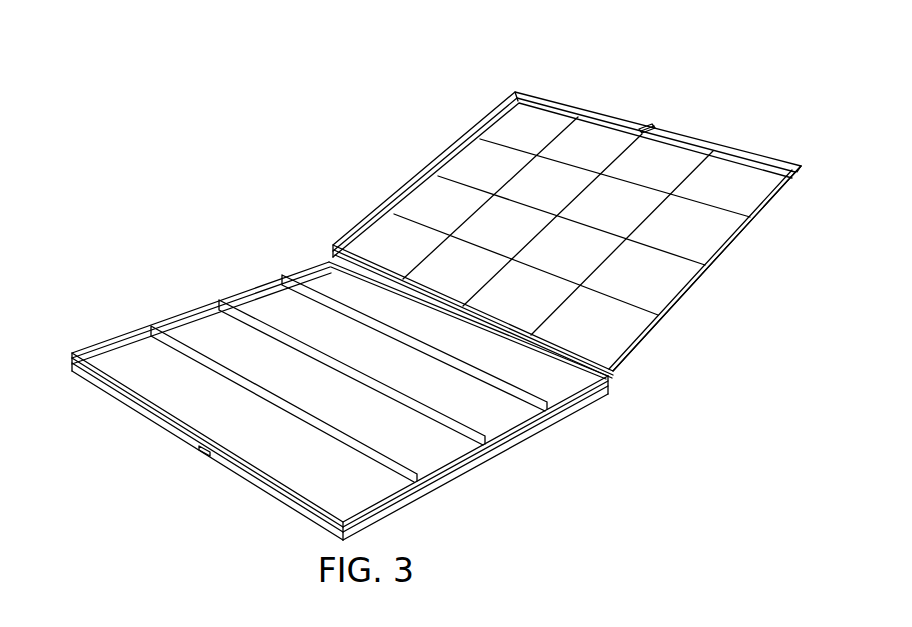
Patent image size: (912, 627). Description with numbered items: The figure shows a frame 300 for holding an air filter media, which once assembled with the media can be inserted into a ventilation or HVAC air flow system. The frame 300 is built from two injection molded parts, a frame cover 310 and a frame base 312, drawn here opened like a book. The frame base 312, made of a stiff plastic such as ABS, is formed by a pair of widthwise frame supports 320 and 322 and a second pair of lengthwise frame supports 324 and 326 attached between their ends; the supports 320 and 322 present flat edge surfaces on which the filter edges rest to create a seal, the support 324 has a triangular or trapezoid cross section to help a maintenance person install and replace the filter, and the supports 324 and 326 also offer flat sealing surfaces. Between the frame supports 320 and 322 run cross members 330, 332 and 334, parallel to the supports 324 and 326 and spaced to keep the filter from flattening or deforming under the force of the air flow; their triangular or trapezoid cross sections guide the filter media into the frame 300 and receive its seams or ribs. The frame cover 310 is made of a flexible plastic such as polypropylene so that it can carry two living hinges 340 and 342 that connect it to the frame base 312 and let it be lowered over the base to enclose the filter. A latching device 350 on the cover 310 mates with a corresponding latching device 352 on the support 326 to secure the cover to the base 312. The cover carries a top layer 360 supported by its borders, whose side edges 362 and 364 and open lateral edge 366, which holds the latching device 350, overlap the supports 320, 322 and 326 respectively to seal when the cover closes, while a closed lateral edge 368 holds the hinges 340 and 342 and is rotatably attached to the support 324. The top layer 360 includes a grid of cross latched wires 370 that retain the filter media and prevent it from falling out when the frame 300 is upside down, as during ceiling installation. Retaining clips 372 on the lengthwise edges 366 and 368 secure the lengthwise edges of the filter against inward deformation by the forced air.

The frame 300 is at (217, 113).
The frame cover 310 is at (415, 177).
The frame base 312 is at (105, 386).
The frame support 320 is at (115, 338).
The frame support 322 is at (498, 444).
The frame support 324 is at (325, 262).
The frame support 326 is at (240, 474).
The cross member 330 is at (284, 276).
The cross member 332 is at (221, 300).
The cross member 334 is at (152, 327).
The living hinge 340 is at (386, 274).
The living hinge 342 is at (598, 378).
The latching device 350 is at (652, 125).
The latching device 352 is at (200, 452).
The top layer 360 is at (768, 160).
The side edge 362 is at (490, 112).
The side edge 364 is at (688, 294).
The open lateral edge 366 is at (642, 127).
The closed lateral edge 368 is at (615, 370).
The cross latched wires 370 is at (753, 213).
The retaining clips 372 is at (572, 198).